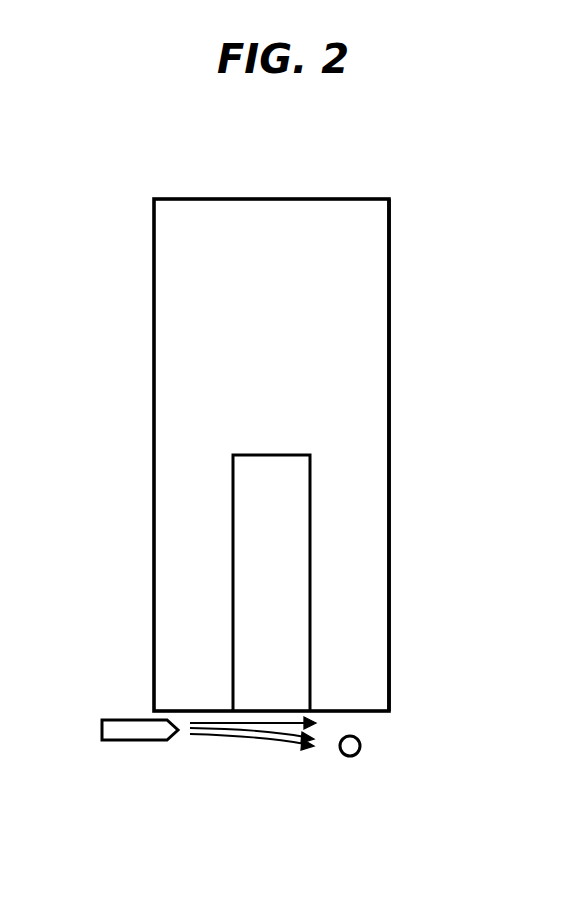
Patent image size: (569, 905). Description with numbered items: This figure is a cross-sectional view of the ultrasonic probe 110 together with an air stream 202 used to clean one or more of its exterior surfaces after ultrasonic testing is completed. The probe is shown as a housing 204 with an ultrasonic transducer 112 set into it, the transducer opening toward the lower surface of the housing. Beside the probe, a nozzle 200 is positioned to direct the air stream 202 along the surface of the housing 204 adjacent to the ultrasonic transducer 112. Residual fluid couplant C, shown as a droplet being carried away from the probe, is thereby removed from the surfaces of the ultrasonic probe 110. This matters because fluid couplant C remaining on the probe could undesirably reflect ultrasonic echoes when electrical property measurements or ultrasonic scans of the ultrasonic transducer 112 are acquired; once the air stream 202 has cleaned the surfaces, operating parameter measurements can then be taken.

The ultrasonic probe 110 is at (440, 264).
The housing 204 is at (391, 420).
The ultrasonic transducer 112 is at (293, 596).
The nozzle 200 is at (133, 740).
The air stream 202 is at (220, 735).
The fluid couplant C is at (360, 747).